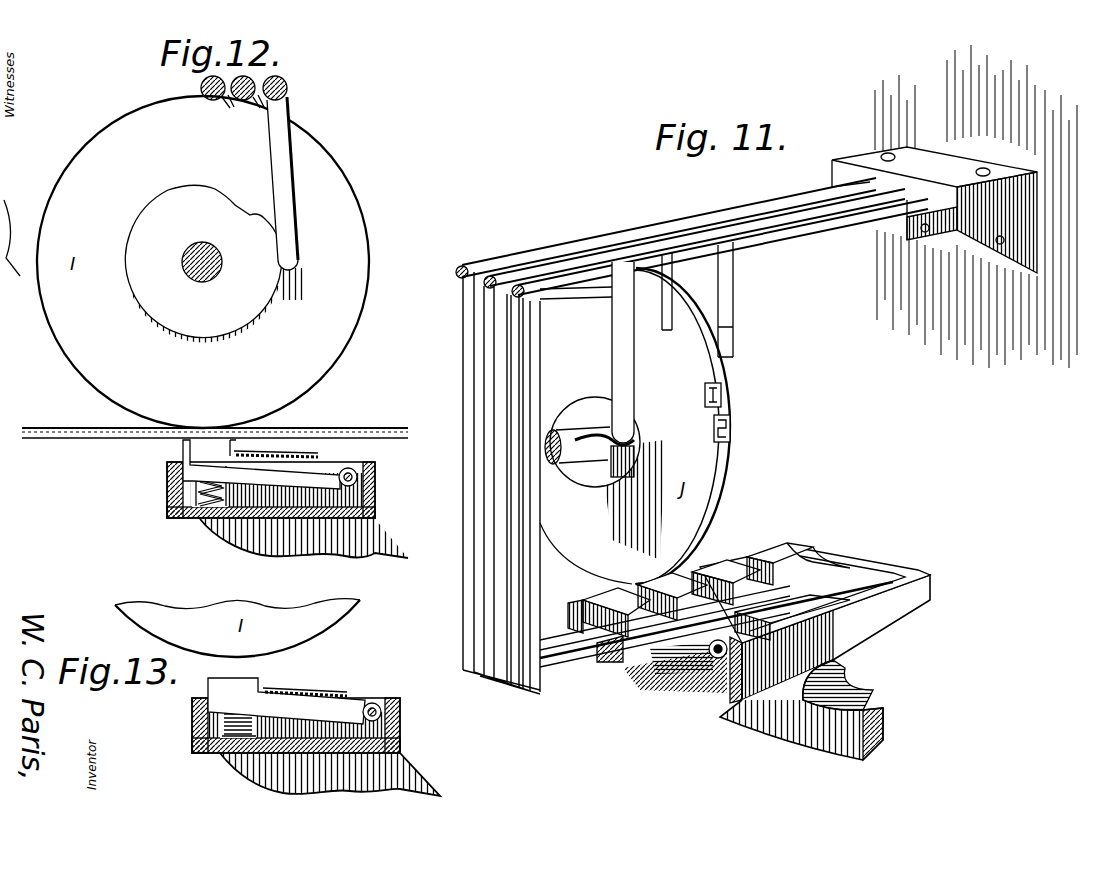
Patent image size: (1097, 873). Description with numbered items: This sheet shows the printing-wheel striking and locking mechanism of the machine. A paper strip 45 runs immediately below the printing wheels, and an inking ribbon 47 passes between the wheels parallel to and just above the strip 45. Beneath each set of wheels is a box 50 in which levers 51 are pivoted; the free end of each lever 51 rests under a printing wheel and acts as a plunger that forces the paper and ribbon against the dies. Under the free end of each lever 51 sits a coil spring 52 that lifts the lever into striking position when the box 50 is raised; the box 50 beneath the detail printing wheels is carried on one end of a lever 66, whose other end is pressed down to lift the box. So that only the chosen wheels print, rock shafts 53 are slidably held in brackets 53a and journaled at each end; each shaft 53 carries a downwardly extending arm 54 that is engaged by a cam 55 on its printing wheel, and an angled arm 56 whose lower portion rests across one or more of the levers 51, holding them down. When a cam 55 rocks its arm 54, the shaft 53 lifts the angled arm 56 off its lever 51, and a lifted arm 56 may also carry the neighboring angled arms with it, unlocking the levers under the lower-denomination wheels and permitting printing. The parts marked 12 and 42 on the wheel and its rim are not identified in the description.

In FIG. 12, the cam 12 is at (217, 250).
In FIG. 11, the cam 12 is at (568, 408).
In FIG. 11, the notches in disc rim 42 is at (731, 402).
In FIG. 12, the strip of paper 45 is at (72, 440).
In FIG. 12, the inking ribbon 47 is at (68, 428).
In FIG. 12, the box 50 is at (377, 490).
In FIG. 13, the box 50 is at (400, 727).
In FIG. 11, the box 50 is at (905, 608).
In FIG. 12, the lever 51 is at (203, 443).
In FIG. 13, the lever 51 is at (222, 685).
In FIG. 11, the lever 51 is at (768, 543).
In FIG. 12, the coil spring 52 is at (203, 502).
In FIG. 13, the coil spring 52 is at (227, 740).
In FIG. 11, the coil spring 52 is at (610, 670).
In FIG. 12, the rock shaft 53 is at (287, 82).
In FIG. 11, the rock shaft 53 is at (667, 254).
In FIG. 11, the bracket 53a is at (942, 163).
In FIG. 12, the arm 54 is at (278, 184).
In FIG. 11, the arm 54 is at (748, 305).
In FIG. 12, the cam 55 is at (192, 243).
In FIG. 11, the cam 55 is at (589, 480).
In FIG. 12, the angled arm 56 is at (312, 453).
In FIG. 13, the angled arm 56 is at (310, 688).
In FIG. 11, the angled arm 56 is at (527, 371).
In FIG. 12, the lever 66 is at (353, 545).
In FIG. 13, the lever 66 is at (433, 789).
In FIG. 11, the lever 66 is at (846, 755).